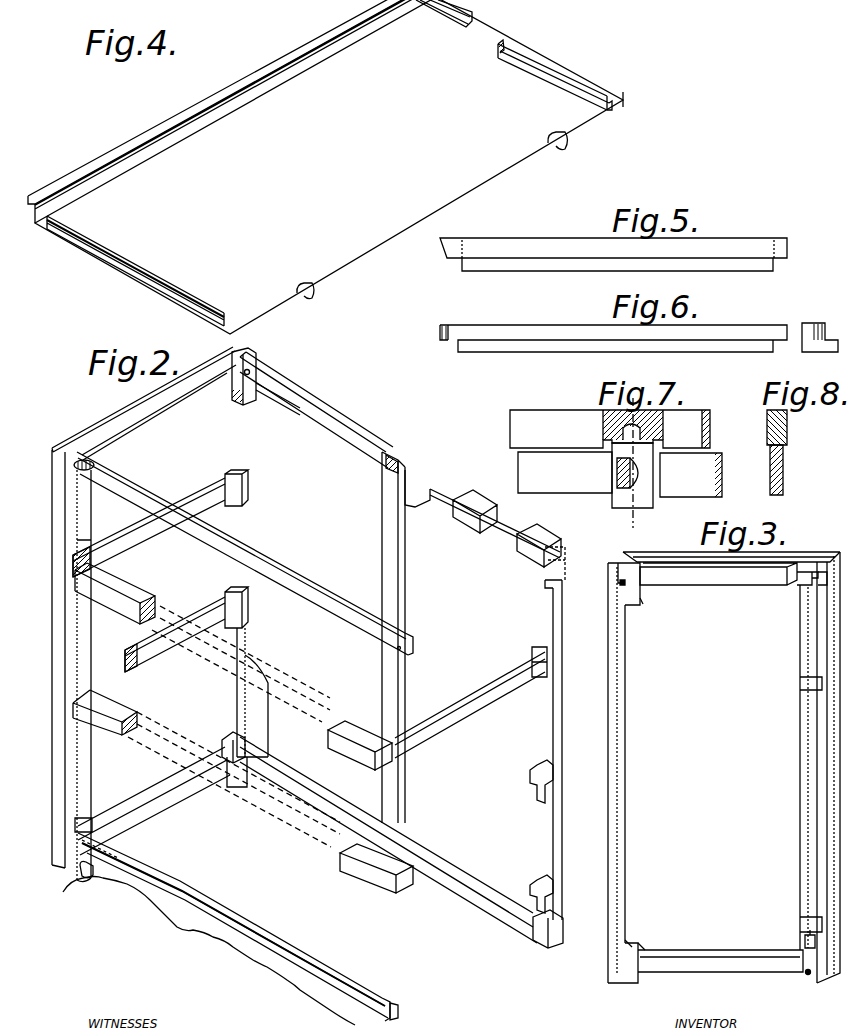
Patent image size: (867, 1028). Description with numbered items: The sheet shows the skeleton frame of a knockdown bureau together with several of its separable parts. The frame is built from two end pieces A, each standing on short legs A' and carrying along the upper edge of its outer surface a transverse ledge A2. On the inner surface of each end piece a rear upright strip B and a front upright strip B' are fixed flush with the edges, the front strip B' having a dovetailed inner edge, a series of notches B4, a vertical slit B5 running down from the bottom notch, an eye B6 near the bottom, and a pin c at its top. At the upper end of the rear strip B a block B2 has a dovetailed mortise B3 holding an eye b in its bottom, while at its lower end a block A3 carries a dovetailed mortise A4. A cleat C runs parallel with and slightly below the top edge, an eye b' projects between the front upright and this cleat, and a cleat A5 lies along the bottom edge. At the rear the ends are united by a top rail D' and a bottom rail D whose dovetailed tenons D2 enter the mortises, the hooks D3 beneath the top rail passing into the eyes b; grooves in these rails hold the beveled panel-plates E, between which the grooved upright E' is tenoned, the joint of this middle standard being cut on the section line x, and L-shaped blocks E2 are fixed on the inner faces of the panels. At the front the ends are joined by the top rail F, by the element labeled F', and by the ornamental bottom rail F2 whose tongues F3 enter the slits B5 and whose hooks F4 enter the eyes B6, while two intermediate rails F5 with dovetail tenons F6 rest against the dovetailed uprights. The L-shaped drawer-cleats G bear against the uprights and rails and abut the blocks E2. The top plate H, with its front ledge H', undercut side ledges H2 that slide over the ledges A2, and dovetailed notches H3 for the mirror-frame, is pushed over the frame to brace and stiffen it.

In FIG. 3, the end piece A is at (708, 691).
In FIG. 2, the end piece A is at (165, 461).
In FIG. 3, the short leg A' is at (705, 970).
In FIG. 3, the transverse ledge A2 is at (731, 548).
In FIG. 2, the transverse ledge A2 is at (144, 401).
In FIG. 3, the block A3 is at (640, 945).
In FIG. 2, the block A3 is at (240, 780).
In FIG. 3, the dovetailed mortise A4 is at (630, 943).
In FIG. 3, the cleat A5 is at (713, 956).
In FIG. 2, the cleat A5 is at (137, 808).
In FIG. 3, the rear upright strip B is at (625, 773).
In FIG. 2, the rear upright strip B is at (176, 608).
In FIG. 3, the front upright strip B' is at (803, 767).
In FIG. 2, the front upright strip B' is at (86, 676).
In FIG. 3, the block B2 is at (651, 611).
In FIG. 2, the block B2 is at (226, 400).
In FIG. 3, the dovetailed mortise B3 is at (605, 597).
In FIG. 3, the notches B4 is at (805, 685).
In FIG. 3, the vertical slit B5 is at (806, 935).
In FIG. 3, the eye B6 is at (808, 970).
In FIG. 2, the eye B6 is at (80, 875).
In FIG. 2, the eye b is at (267, 358).
In FIG. 3, the eye b' is at (807, 560).
In FIG. 3, the pin c is at (820, 578).
In FIG. 2, the pin c is at (74, 458).
In FIG. 3, the strip or cleat C is at (718, 574).
In FIG. 2, the strip or cleat C is at (165, 428).
In FIG. 8, the bottom rear rail D is at (788, 427).
In FIG. 2, the bottom rear rail D is at (388, 840).
In FIG. 7, the top rear rail D' is at (610, 429).
In FIG. 2, the top rear rail D' is at (404, 459).
In FIG. 2, the dovetailed tenon D2 is at (232, 728).
In FIG. 2, the hook D3 is at (536, 733).
In FIG. 7, the rear panel-plate E is at (585, 475).
In FIG. 2, the rear panel-plate E is at (310, 532).
In FIG. 7, the upright or post E' is at (691, 475).
In FIG. 8, the upright or post E' is at (791, 470).
In FIG. 2, the upright or post E' is at (406, 637).
In FIG. 2, the L-shaped block E2 is at (248, 492).
In FIG. 2, the front top rail F is at (245, 553).
In FIG. 2, the front rail F' is at (226, 929).
In FIG. 2, the ornamental bottom rail F2 is at (536, 648).
In FIG. 2, the tongue F3 is at (399, 1011).
In FIG. 2, the hook F4 is at (92, 872).
In FIG. 2, the intermediate rail F5 is at (134, 600).
In FIG. 2, the dovetail tenon F6 is at (410, 768).
In FIG. 5, the drawer-cleat G is at (613, 254).
In FIG. 6, the drawer-cleat G is at (829, 312).
In FIG. 2, the drawer-cleat G is at (198, 476).
In FIG. 4, the top plate H is at (329, 167).
In FIG. 4, the ledge H' is at (232, 111).
In FIG. 4, the undercut L-shaped side ledge H2 is at (215, 258).
In FIG. 4, the dovetailed notch H3 is at (441, 221).
In FIG. 7, the section line x is at (629, 463).